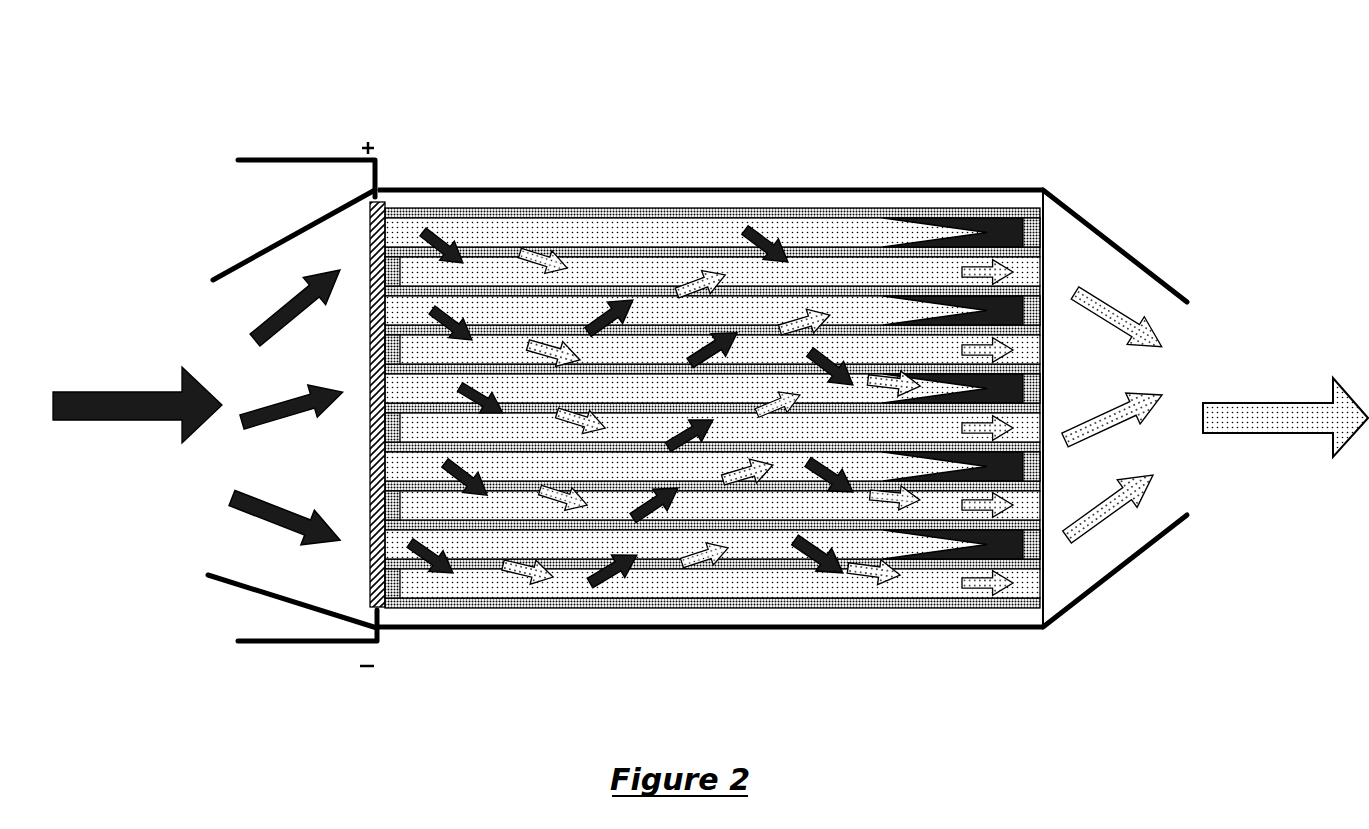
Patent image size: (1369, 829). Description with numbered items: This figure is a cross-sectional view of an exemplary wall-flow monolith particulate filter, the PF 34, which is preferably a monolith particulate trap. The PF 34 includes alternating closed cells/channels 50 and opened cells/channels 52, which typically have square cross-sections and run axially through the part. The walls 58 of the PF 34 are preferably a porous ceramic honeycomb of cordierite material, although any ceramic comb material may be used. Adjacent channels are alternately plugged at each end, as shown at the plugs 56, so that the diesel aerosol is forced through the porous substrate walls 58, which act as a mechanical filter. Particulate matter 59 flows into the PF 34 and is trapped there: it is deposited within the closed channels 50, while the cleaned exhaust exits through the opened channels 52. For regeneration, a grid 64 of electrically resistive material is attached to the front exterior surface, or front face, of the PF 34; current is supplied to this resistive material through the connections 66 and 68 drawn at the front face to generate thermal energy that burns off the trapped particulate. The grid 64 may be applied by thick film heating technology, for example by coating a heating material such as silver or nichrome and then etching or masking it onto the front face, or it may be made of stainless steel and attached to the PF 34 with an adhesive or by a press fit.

The particulate filter 34 is at (687, 78).
The closed cells/channels 50 is at (882, 312).
The opened cells/channels 52 is at (770, 500).
The plugs 56 is at (1037, 310).
The walls 58 is at (675, 250).
The particulate matter 59 is at (1008, 220).
The grid 64 is at (370, 320).
The positive lead 66 is at (288, 160).
The negative lead 68 is at (325, 645).